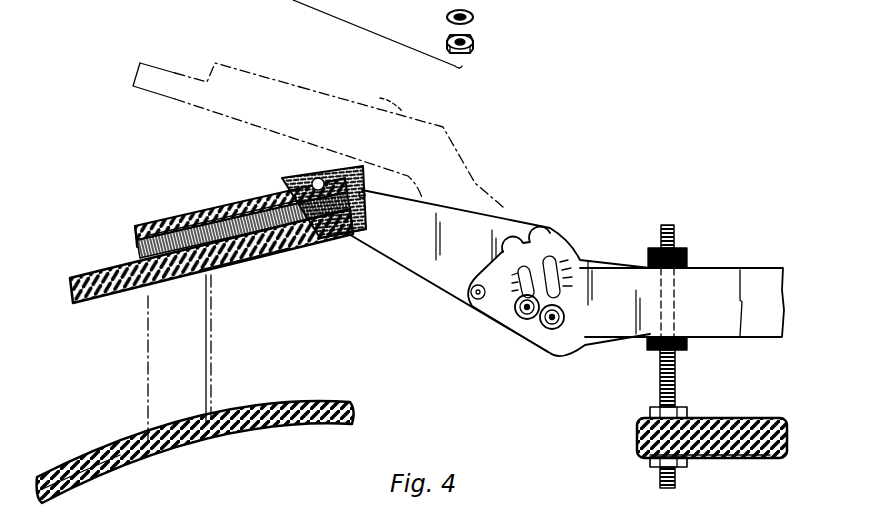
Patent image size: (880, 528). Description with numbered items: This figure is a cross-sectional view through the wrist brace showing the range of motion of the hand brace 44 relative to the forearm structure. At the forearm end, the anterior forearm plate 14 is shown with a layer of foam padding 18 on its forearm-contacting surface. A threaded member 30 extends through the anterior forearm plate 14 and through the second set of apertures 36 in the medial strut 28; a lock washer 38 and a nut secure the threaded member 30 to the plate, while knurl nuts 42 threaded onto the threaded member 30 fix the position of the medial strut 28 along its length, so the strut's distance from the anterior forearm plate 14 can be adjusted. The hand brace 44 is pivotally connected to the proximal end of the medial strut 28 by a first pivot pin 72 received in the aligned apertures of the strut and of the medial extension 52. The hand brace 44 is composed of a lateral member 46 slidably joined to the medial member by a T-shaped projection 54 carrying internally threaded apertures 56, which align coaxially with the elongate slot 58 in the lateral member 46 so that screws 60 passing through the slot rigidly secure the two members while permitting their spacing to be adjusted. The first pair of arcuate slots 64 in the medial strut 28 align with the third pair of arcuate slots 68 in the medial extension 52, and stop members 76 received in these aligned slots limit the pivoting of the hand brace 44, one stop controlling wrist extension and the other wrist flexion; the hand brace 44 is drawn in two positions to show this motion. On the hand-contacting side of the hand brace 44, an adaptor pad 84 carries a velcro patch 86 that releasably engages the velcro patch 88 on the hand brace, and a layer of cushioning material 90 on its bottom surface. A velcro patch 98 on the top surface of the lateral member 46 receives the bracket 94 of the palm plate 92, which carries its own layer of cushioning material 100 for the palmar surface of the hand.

The anterior forearm plate 14 is at (743, 455).
The foam padding 18 is at (750, 420).
The medial strut 28 is at (757, 280).
The threaded member 30 is at (667, 225).
The second set of apertures 36 is at (675, 287).
The lock washer 38 is at (472, 14).
The knurl nut 42 is at (687, 343).
The hand brace portion 44 is at (170, 68).
The lateral member 46 is at (240, 210).
The medial extension 52 is at (427, 262).
The T-shaped projection 54 is at (295, 200).
The internally threaded apertures 56 is at (320, 238).
The elongate slot 58 is at (315, 176).
The screw 60 is at (385, 97).
The first pair of arcuate slots 64 is at (527, 340).
The third pair of arcuate slots 68 is at (541, 235).
The first pivot pin 72 is at (467, 292).
The stop member 76 is at (515, 315).
The adaptor pad 84 is at (82, 280).
The velcro patch 86 is at (364, 198).
The velcro patch 88 is at (133, 245).
The cushioning material 90 is at (240, 266).
The palm plate 92 is at (293, 427).
The bracket 94 is at (213, 343).
The velcro patch 98 is at (225, 205).
The cushioning material 100 is at (100, 453).